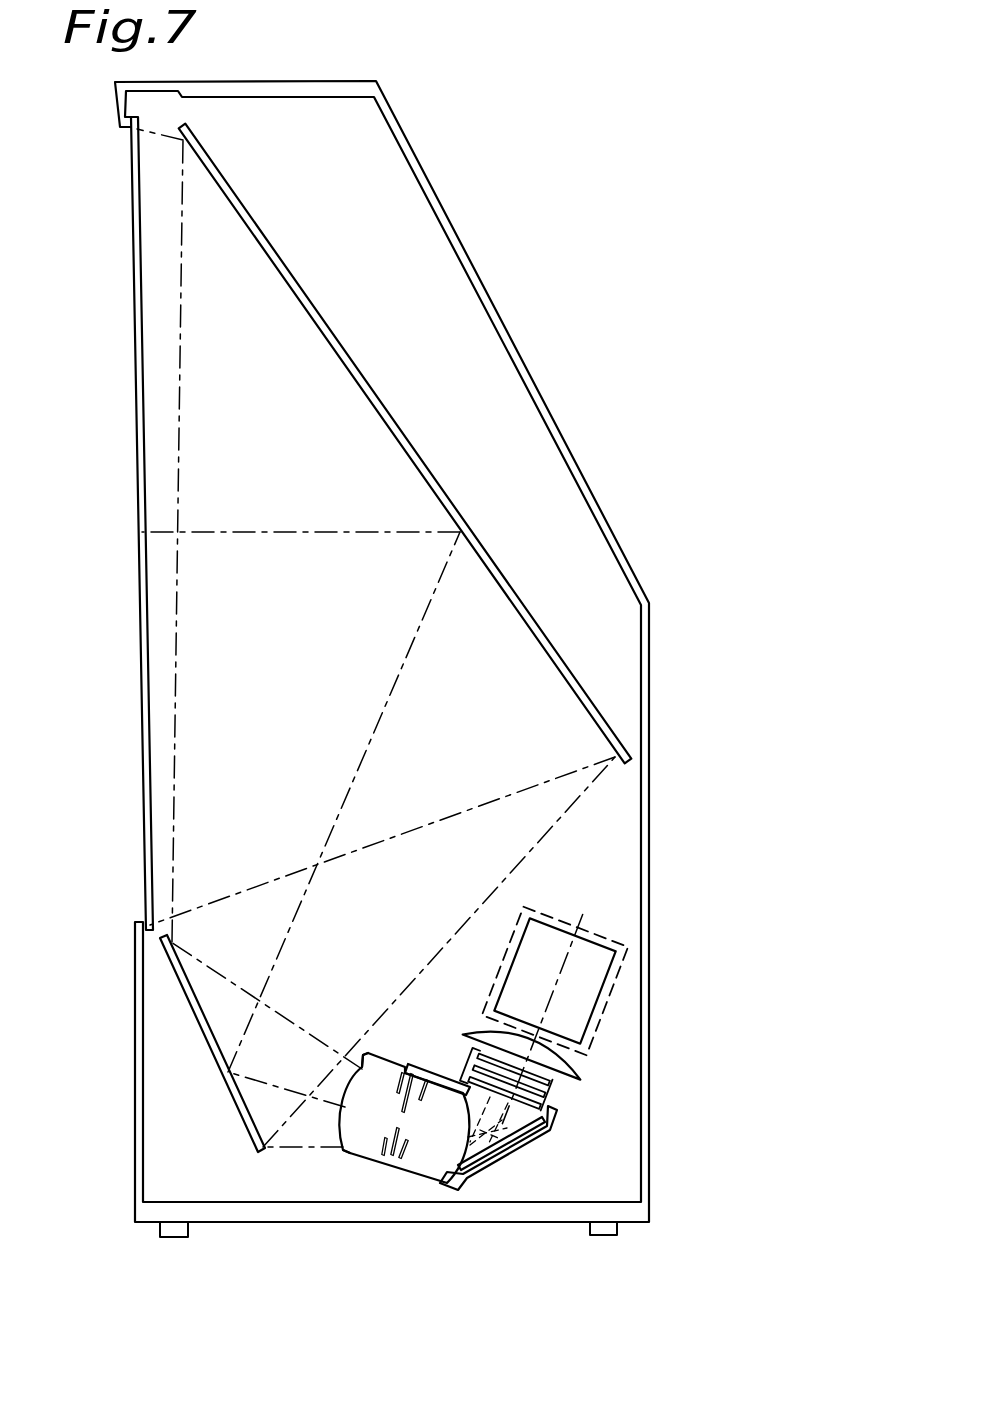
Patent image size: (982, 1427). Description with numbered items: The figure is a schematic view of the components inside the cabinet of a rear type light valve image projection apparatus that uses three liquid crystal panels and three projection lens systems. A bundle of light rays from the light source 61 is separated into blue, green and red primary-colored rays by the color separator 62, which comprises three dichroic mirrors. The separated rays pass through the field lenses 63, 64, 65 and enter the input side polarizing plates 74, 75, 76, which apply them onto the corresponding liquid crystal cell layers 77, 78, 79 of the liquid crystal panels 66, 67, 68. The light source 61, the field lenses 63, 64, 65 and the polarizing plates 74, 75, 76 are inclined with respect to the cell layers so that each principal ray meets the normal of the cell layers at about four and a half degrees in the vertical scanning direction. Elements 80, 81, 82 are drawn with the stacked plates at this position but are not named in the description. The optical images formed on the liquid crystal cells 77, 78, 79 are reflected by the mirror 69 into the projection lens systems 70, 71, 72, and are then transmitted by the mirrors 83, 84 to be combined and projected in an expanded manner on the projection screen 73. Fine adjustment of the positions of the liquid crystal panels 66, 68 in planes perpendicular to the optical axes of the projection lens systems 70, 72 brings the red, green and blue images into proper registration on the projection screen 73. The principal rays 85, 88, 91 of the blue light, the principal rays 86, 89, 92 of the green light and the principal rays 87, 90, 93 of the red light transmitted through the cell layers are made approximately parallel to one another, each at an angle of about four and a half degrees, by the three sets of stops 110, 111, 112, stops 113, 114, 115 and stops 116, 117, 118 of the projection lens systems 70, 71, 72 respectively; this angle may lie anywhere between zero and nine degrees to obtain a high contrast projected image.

The light source 61 is at (592, 928).
The color separator 62 is at (625, 966).
The field lens 63 is at (650, 1026).
The field lens 64 is at (650, 1026).
The field lens 65 is at (577, 1068).
The liquid crystal panel 66 is at (353, 1098).
The liquid crystal panel 67 is at (353, 1098).
The liquid crystal panel 68 is at (353, 1098).
The mirror 69 is at (470, 1160).
The projection lens system 70 is at (348, 1191).
The projection lens system 71 is at (348, 1191).
The projection lens system 72 is at (413, 1168).
The projection screen 73 is at (131, 232).
The input side polarizing plate 74 is at (653, 1079).
The input side polarizing plate 75 is at (653, 1079).
The input side polarizing plate 76 is at (555, 1085).
The liquid crystal cell layer 77 is at (660, 1106).
The liquid crystal cell layer 78 is at (660, 1106).
The liquid crystal cell layer 79 is at (553, 1095).
The filter plate 80 is at (667, 1140).
The filter plate 81 is at (667, 1140).
The filter plate 82 is at (552, 1105).
The mirror 83 is at (183, 990).
The mirror 84 is at (262, 236).
The principal ray 85 is at (665, 1187).
The principal ray 86 is at (665, 1187).
The principal ray 87 is at (548, 1128).
The principal ray 88 is at (669, 976).
The principal ray 89 is at (669, 976).
The principal ray 90 is at (508, 1030).
The principal ray 91 is at (586, 1229).
The principal ray 92 is at (586, 1229).
The principal ray 93 is at (510, 1135).
The stop 110 is at (472, 1221).
The stop 113 is at (472, 1221).
The stop 116 is at (419, 1175).
The stop 111 is at (200, 1219).
The stop 114 is at (200, 1219).
The stop 117 is at (385, 1140).
The stop 112 is at (191, 1115).
The stop 115 is at (191, 1115).
The stop 118 is at (343, 1150).